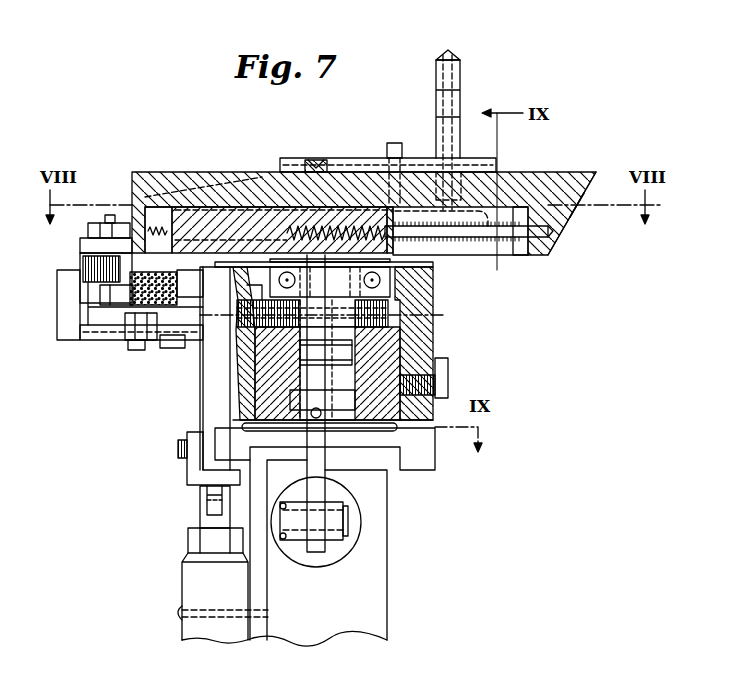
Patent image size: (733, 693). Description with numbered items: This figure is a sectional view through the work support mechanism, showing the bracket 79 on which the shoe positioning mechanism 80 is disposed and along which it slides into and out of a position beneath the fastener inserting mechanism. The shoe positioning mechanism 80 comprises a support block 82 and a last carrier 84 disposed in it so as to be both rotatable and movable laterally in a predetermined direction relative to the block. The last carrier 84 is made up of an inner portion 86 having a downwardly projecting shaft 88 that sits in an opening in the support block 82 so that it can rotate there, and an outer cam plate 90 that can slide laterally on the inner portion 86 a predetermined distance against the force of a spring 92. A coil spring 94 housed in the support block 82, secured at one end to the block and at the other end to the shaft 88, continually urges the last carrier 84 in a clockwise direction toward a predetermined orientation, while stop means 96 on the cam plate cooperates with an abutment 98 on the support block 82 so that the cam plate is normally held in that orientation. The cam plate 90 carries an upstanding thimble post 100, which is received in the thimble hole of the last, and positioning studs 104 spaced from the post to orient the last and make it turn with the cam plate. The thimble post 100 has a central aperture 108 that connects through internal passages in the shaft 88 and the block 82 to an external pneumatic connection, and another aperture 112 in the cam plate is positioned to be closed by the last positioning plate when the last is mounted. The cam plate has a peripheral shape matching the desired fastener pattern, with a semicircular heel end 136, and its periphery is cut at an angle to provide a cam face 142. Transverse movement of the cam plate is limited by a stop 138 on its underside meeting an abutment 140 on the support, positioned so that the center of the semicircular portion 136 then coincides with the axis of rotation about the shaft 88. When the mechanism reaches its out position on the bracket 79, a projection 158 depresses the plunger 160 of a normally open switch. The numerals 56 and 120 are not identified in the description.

The cylinder 56 is at (188, 588).
The bracket 79 is at (385, 580).
The shoe positioning mechanism 80 is at (490, 322).
The support block 82 is at (437, 336).
The last carrier 84 is at (580, 244).
The inner portion 86 is at (195, 207).
The shaft 88 is at (420, 292).
The cam plate 90 is at (531, 171).
The spring 92 is at (490, 240).
The coil spring 94 is at (231, 325).
The stop means 96 is at (112, 303).
The abutment 98 is at (90, 290).
The thimble post 100 is at (455, 74).
The positioning studs 104 is at (392, 142).
The central aperture 108 is at (448, 50).
The aperture 112 is at (372, 158).
The workpiece 120 is at (107, 687).
The semicircular heel end 136 is at (597, 170).
The stop 138 is at (523, 253).
The abutment 140 is at (395, 243).
The cam face 142 is at (573, 208).
The projection 158 is at (188, 480).
The plunger 160 is at (200, 518).